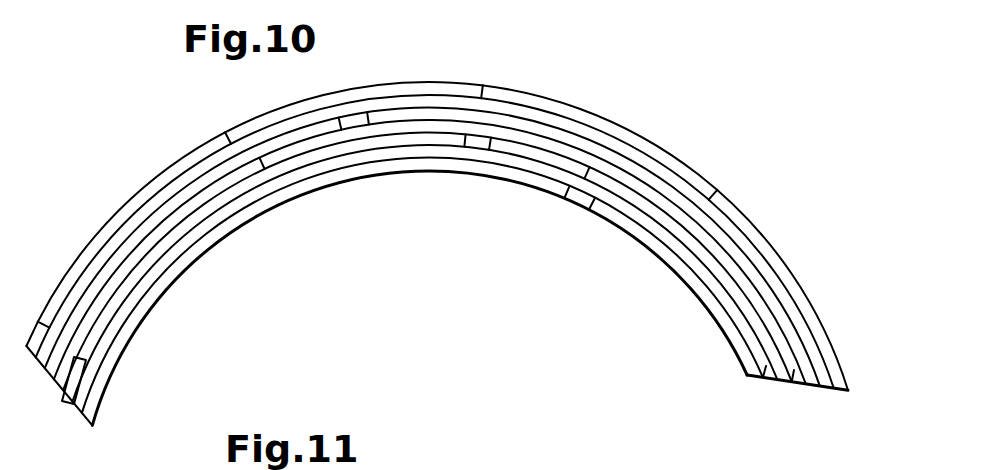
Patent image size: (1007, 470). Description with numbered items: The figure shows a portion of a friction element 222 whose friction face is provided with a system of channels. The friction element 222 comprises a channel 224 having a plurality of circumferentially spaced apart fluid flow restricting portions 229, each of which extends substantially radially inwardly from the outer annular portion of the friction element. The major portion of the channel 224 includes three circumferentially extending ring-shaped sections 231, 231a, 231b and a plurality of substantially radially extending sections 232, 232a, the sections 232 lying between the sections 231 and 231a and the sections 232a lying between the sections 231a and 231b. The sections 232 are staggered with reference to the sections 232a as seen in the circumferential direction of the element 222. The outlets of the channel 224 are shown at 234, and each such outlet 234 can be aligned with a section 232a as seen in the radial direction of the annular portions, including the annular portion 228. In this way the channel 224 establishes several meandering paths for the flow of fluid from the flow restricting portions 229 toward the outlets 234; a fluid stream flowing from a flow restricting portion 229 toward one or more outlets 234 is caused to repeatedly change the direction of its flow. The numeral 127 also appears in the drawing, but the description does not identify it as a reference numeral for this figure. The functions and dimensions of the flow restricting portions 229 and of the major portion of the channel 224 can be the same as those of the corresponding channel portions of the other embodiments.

In FIG. 10, the friction lining carrier segment 127 is at (110, 220).
In FIG. 10, the friction element 222 is at (625, 135).
In FIG. 10, the channel 224 is at (740, 243).
In FIG. 10, the annular portion 228 is at (469, 178).
In FIG. 10, the fluid flow restricting portions 229 is at (484, 86).
In FIG. 11, the fluid flow restricting portions 229 is at (505, 469).
In FIG. 10, the ring-shaped section 231 is at (830, 378).
In FIG. 10, the ring-shaped section 231a is at (800, 383).
In FIG. 10, the ring-shaped section 231b is at (773, 372).
In FIG. 10, the radially extending sections 232 is at (775, 317).
In FIG. 10, the radially extending sections 232a is at (682, 232).
In FIG. 10, the outlets 234 is at (177, 270).